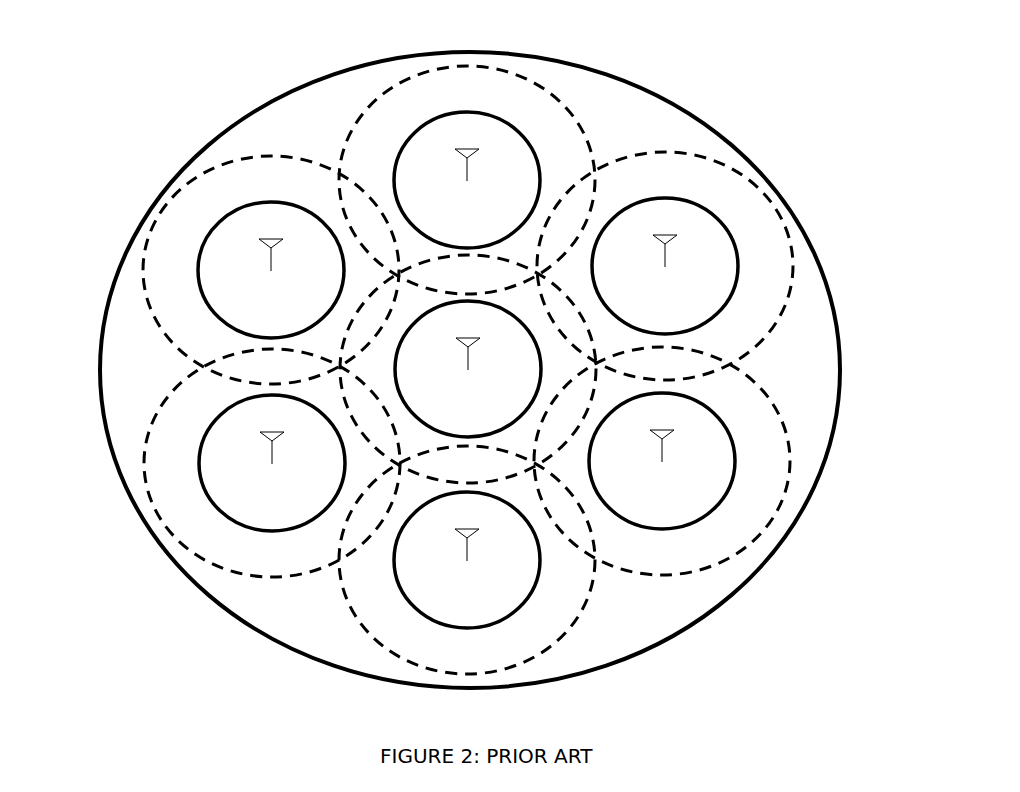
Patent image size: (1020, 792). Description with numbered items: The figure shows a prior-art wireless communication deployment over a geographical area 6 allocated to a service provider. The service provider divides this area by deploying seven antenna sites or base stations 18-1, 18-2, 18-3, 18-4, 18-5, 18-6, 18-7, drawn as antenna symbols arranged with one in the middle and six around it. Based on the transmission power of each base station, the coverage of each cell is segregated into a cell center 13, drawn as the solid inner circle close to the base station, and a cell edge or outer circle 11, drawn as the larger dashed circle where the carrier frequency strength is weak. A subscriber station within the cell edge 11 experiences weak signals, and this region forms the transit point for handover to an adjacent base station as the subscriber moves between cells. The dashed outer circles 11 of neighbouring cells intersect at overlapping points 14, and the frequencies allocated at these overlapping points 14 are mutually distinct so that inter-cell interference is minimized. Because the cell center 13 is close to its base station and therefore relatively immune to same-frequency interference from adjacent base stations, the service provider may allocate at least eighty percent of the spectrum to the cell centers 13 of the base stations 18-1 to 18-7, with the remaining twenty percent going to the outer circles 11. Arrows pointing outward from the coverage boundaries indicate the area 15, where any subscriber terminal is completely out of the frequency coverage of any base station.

The geographical area 6 is at (745, 147).
The cell edge 11 is at (547, 88).
The cell center 13 is at (467, 112).
The overlapping points 14 is at (458, 366).
The area out of frequency coverage 15 is at (305, 117).
The base station 18-1 is at (468, 363).
The base station 18-2 is at (467, 174).
The base station 18-3 is at (665, 260).
The base station 18-4 is at (662, 455).
The base station 18-5 is at (467, 554).
The base station 18-6 is at (272, 457).
The base station 18-7 is at (271, 264).